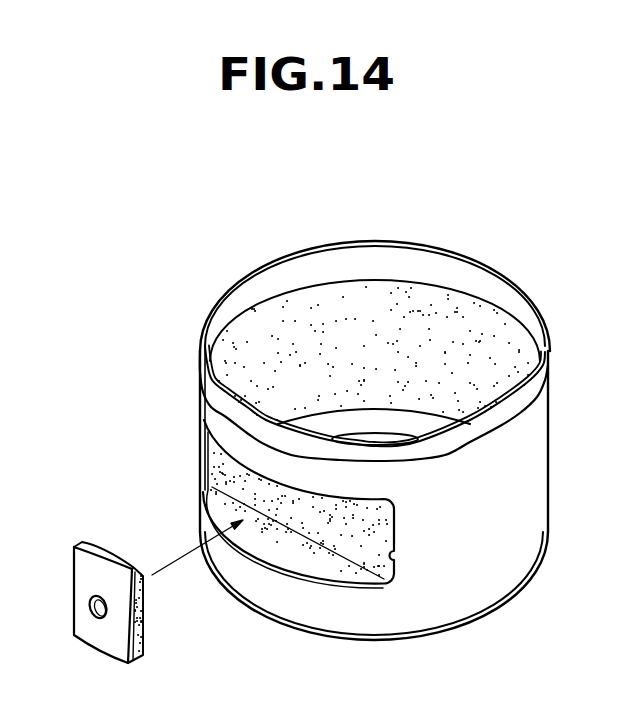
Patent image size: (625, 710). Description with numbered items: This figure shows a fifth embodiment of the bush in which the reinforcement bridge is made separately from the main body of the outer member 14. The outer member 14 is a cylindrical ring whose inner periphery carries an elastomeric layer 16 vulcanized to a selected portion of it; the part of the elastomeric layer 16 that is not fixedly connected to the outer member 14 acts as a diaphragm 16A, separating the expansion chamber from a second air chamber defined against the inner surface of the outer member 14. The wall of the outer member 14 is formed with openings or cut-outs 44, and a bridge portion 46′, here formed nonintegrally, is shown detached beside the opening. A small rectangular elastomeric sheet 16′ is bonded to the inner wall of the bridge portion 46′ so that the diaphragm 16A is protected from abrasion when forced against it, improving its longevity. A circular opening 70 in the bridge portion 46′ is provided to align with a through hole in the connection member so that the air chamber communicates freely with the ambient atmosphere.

The outer member 14 is at (532, 487).
The elastomeric layer 16 is at (501, 334).
The diaphragm 16A is at (203, 513).
The elastomeric sheet 16′ is at (146, 628).
The openings 44 is at (397, 561).
The bridge portion 46′ is at (100, 549).
The circular opening 70 is at (91, 609).